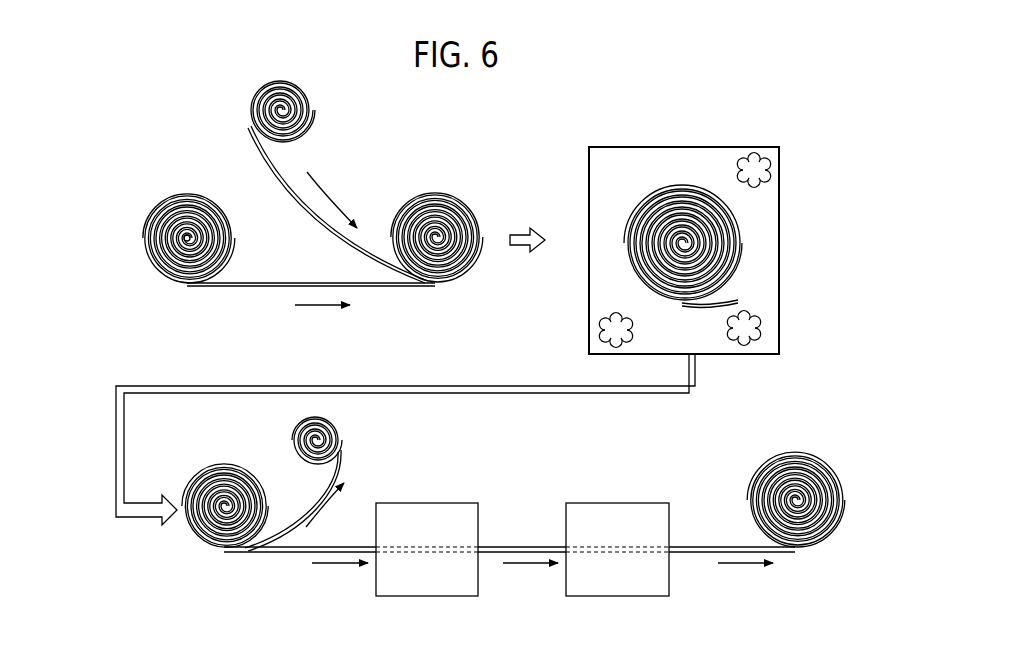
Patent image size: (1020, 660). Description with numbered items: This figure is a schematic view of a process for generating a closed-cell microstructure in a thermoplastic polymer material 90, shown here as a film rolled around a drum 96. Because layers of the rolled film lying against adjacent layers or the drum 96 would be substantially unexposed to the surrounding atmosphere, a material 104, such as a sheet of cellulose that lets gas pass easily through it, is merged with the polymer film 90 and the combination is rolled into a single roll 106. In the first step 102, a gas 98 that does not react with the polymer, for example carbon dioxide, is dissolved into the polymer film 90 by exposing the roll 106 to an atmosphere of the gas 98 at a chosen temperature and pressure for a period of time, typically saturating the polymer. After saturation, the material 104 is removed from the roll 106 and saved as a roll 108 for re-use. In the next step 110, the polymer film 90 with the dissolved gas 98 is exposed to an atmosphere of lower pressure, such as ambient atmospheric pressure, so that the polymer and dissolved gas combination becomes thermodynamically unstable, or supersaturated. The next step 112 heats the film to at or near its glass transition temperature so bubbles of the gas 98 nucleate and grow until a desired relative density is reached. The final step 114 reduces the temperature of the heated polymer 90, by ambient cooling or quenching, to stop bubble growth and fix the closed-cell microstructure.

The thermoplastic polymer material 90 is at (162, 195).
The drum 96 is at (187, 238).
The interleaved material 104 is at (248, 80).
The single roll 106 is at (465, 188).
The first step 102 is at (630, 143).
The gas 98 is at (768, 172).
The next step (pressure reduction) 110 is at (160, 378).
The roll of removed material 108 is at (348, 426).
The next step (bubble nucleation and growth) 112 is at (432, 500).
The next step (cooling) 114 is at (612, 500).